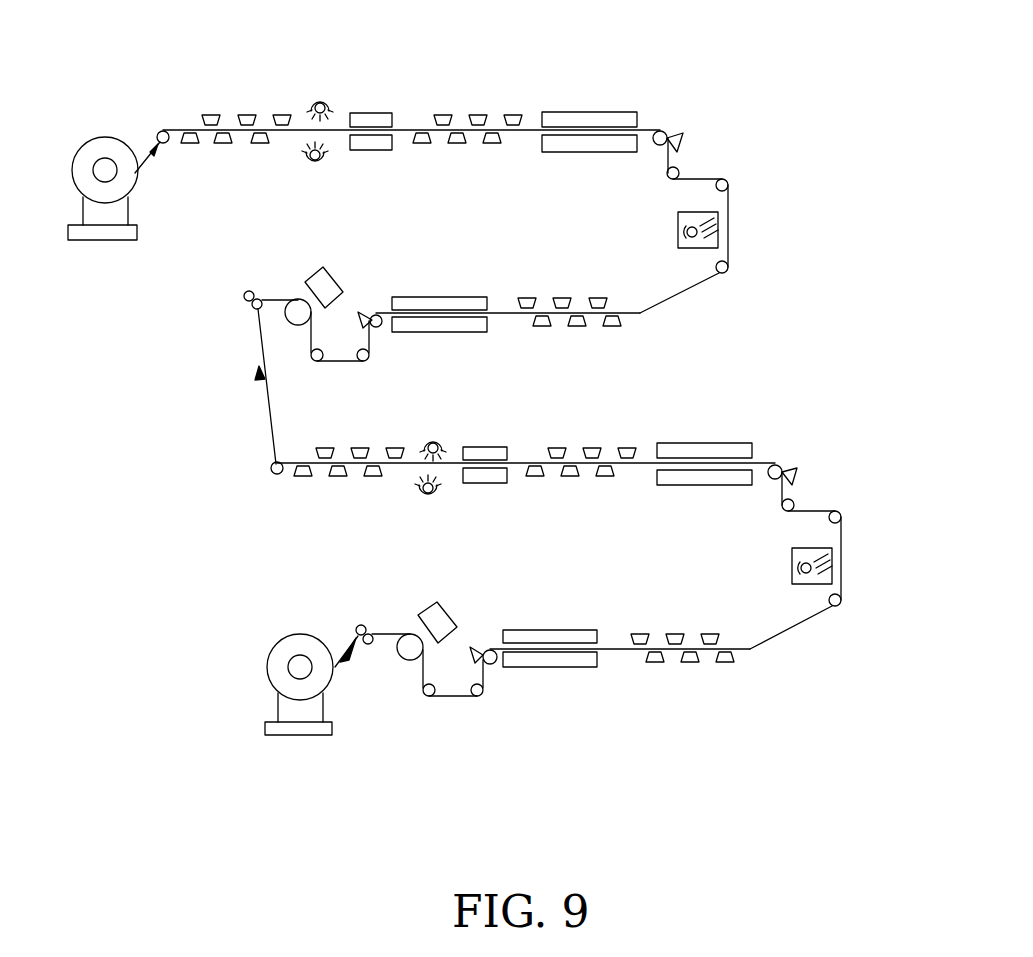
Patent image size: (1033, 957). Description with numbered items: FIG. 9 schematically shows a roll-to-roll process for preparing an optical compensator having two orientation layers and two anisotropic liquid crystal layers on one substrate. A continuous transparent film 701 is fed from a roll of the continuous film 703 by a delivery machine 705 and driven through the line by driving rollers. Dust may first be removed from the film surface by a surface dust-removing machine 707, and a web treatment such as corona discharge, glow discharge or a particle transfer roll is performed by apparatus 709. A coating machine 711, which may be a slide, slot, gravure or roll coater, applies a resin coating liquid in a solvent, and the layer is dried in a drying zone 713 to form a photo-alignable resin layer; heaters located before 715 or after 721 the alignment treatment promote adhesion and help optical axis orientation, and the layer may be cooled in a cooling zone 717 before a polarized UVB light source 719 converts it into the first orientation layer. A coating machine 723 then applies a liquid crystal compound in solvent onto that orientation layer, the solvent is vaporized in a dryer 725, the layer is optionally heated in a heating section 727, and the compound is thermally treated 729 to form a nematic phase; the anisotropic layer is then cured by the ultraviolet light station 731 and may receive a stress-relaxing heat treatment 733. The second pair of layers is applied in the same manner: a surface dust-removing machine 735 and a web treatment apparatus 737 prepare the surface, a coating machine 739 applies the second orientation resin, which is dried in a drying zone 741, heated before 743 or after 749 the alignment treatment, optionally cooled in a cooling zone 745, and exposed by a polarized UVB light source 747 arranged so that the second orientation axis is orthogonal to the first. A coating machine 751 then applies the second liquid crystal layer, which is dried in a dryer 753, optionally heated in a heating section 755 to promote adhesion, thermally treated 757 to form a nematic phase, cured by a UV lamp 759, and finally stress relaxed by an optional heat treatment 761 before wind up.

The continuous transparent film 701 is at (365, 648).
The roll of continuous film 703 is at (268, 661).
The delivery machine 705 is at (268, 732).
The surface dust-removing machine 707 is at (358, 627).
The web treatment apparatus 709 is at (422, 617).
The coating machine 711 is at (472, 650).
The drying zone 713 is at (565, 643).
The heating-unit location 715 is at (690, 665).
The cooling zone 717 is at (792, 566).
The polarized UVB light source 719 is at (840, 511).
The optional heating unit 721 is at (797, 468).
The coating machine 723 is at (705, 485).
The dryer 725 is at (575, 478).
The heating section 727 is at (492, 483).
The thermal treatment unit 729 is at (433, 443).
The ultraviolet light station 731 is at (360, 448).
The optional heating unit 733 is at (249, 291).
The surface dust-removing machine 735 is at (310, 282).
The web treatment apparatus 737 is at (365, 318).
The coating machine 739 is at (445, 297).
The drying zone 741 is at (577, 328).
The heating-unit location 743 is at (678, 232).
The cooling zone 745 is at (725, 179).
The polarized UVB light source 747 is at (683, 135).
The heating unit 749 is at (592, 152).
The coating machine 751 is at (460, 143).
The dryer 753 is at (378, 150).
The heating section 755 is at (320, 102).
The thermal treatment unit 757 is at (247, 115).
The UV lamp 759 is at (72, 229).
The optional heat treatment unit 761 is at (105, 137).